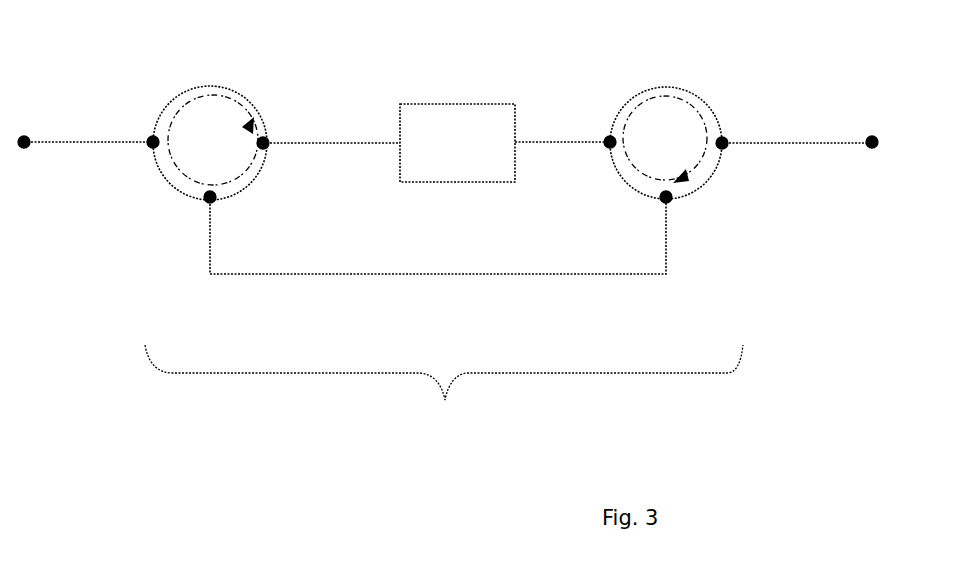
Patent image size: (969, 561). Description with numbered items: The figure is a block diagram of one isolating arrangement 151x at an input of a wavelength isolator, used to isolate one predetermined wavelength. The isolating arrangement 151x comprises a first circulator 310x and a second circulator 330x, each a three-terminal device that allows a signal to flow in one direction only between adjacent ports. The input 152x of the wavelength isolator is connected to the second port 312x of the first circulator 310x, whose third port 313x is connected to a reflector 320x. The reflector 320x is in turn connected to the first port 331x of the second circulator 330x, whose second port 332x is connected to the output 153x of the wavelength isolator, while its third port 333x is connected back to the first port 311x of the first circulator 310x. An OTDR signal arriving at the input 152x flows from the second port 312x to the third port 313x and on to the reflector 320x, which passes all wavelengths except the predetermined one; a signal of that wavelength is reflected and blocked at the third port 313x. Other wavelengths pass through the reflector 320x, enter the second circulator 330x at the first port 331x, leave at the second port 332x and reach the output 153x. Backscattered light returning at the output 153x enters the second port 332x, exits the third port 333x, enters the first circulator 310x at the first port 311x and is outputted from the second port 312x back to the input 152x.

The isolating arrangement 151x is at (444, 388).
The input 152x is at (27, 137).
The output 153x is at (870, 148).
The first circulator 310x is at (210, 85).
The first port 311x is at (208, 204).
The second port 312x is at (150, 148).
The third port 313x is at (267, 138).
The reflector 320x is at (457, 143).
The second circulator 330x is at (665, 86).
The first port 331x is at (606, 150).
The second port 332x is at (726, 138).
The third port 333x is at (669, 204).